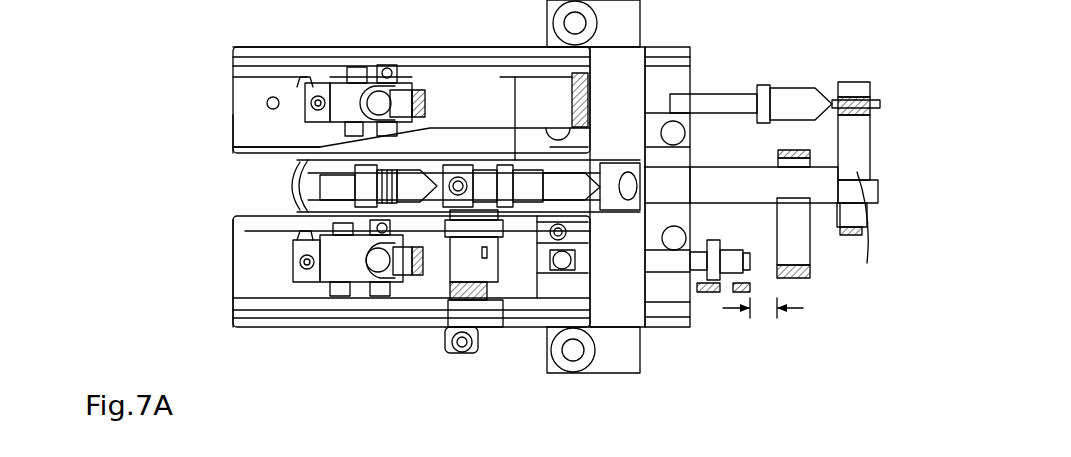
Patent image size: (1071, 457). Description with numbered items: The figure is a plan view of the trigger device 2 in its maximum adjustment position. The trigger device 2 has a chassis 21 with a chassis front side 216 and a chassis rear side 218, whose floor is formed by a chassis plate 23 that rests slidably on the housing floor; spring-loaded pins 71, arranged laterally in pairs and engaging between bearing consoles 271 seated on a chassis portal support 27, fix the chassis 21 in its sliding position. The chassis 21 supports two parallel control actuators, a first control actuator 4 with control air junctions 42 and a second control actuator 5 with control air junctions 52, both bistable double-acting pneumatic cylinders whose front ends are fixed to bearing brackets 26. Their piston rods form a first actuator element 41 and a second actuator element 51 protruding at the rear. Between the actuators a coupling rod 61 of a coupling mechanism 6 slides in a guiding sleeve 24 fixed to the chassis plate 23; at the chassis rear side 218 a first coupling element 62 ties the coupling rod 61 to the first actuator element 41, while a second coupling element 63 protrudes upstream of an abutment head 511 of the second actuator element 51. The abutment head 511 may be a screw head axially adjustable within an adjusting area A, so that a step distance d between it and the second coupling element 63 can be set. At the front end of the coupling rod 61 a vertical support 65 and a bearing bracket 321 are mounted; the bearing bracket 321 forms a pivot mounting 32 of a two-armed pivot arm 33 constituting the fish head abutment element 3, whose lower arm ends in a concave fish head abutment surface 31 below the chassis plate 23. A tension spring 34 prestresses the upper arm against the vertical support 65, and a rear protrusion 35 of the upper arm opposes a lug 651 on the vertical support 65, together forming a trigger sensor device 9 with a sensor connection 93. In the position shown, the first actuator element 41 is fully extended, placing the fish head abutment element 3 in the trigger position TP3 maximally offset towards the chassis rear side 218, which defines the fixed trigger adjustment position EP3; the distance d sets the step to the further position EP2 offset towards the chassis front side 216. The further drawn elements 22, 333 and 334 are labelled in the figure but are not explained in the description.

The trigger device 2 is at (270, 44).
The chassis 21 is at (233, 62).
The housing part 22 is at (233, 218).
The chassis plate 23 is at (233, 122).
The guiding sleeve 24 is at (690, 165).
The bearing brackets 26 is at (305, 88).
The chassis portal support 27 is at (648, 297).
The fish head abutment element 3 is at (290, 163).
The fish head abutment surface 31 is at (290, 179).
The pivot mounting 32 is at (300, 210).
The pivot arm 33 is at (290, 192).
The tension spring 34 is at (457, 170).
The rear protrusion 35 is at (437, 292).
The first control actuator 4 is at (233, 152).
The first actuator element 41 is at (670, 93).
The control air junctions 42 is at (408, 50).
The second control actuator 5 is at (375, 225).
The second actuator element 51 is at (691, 243).
The control air junctions 52 is at (440, 212).
The coupling mechanism 6 is at (861, 328).
The coupling rod 61 is at (720, 167).
The first coupling element 62 is at (857, 234).
The second coupling element 63 is at (812, 240).
The vertical support 65 is at (526, 205).
The spring-loaded pins 71 is at (610, 36).
The trigger sensor device 9 is at (436, 343).
The sensor connection 93 is at (455, 357).
The chassis front side 216 is at (147, 180).
The chassis rear side 218 is at (814, 77).
The bearing consoles 271 is at (645, 25).
The bearing bracket 321 is at (373, 216).
The bearing ring 333 is at (461, 170).
The bearing pin 334 is at (551, 172).
The abutment head 511 is at (760, 237).
The lug 651 is at (505, 240).
The adjusting area A is at (694, 273).
The step distance d is at (763, 321).
The end position 2 EP2 is at (722, 288).
The fixed trigger adjustment position EP3 is at (830, 87).
The trigger position TP3 is at (277, 254).